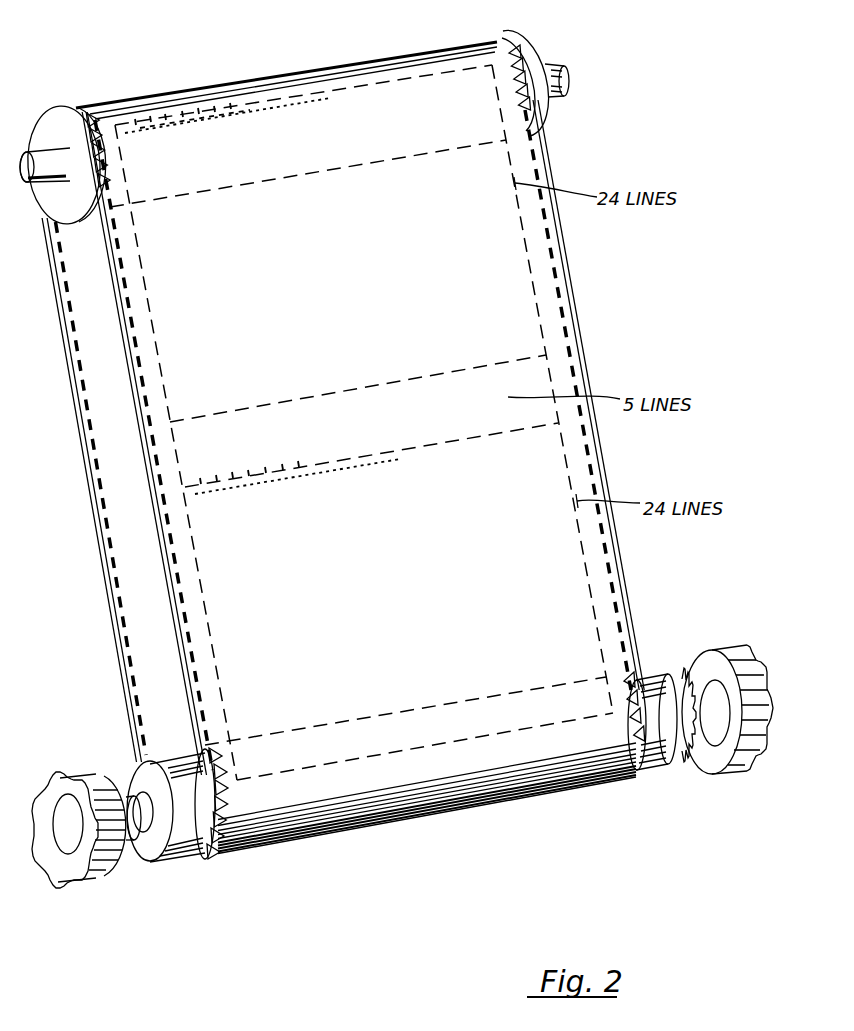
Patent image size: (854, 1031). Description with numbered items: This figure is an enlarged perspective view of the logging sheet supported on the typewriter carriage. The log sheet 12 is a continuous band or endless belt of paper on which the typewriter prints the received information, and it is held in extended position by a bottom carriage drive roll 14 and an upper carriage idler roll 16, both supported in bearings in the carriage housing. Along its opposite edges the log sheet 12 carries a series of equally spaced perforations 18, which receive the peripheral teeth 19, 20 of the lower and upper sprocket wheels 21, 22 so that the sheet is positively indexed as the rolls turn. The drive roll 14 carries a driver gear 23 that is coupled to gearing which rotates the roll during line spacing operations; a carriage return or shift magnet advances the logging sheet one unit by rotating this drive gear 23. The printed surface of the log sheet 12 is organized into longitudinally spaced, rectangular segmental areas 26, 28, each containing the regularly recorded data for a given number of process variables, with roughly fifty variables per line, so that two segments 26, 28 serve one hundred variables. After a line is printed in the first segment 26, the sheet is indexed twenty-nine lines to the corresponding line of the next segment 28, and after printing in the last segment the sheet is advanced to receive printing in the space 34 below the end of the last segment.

The log sheet 12 is at (80, 449).
The bottom carriage drive roll 14 is at (153, 853).
The upper carriage idler roll 16 is at (50, 122).
The perforations 18 is at (172, 583).
The peripheral teeth of lower sprocket wheel 19 is at (205, 860).
The peripheral teeth of upper sprocket wheel 20 is at (80, 108).
The lower sprocket wheel 21 is at (185, 748).
The upper sprocket wheel 22 is at (96, 218).
The driver gear 23 is at (687, 760).
The segmental area 26 is at (505, 305).
The segmental area 28 is at (558, 588).
The space below end of last segment 34 is at (478, 762).